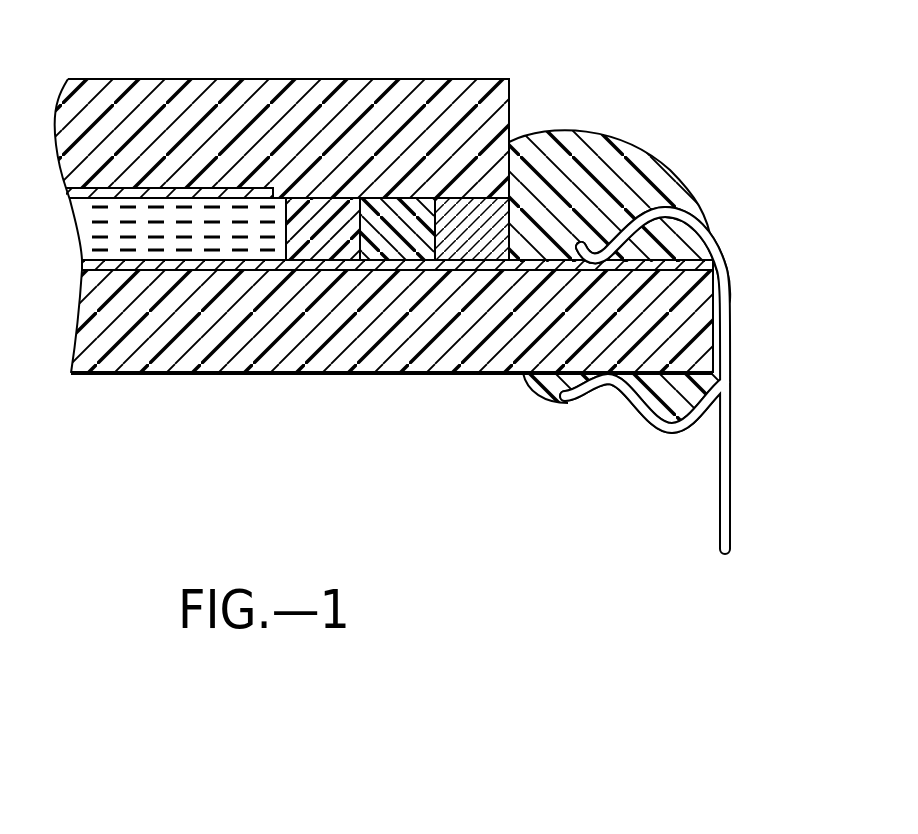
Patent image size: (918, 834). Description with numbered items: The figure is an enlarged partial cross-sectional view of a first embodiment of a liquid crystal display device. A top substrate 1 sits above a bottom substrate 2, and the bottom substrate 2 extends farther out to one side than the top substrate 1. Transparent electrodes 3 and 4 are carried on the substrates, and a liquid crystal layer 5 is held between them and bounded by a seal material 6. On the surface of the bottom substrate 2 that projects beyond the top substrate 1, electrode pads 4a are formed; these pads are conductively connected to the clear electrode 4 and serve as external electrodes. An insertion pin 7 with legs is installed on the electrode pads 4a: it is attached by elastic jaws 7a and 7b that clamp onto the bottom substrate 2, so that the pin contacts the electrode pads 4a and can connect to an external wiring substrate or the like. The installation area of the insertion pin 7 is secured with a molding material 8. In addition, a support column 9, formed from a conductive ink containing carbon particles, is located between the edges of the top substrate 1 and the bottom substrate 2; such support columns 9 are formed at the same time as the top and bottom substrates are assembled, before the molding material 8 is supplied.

The top substrate 1 is at (312, 78).
The bottom substrate 2 is at (194, 373).
The transparent electrode 3 is at (188, 190).
The transparent electrode 4 is at (142, 262).
The electrode pad 4a is at (668, 256).
The liquid crystal layer 5 is at (241, 246).
The seal material 6 is at (303, 252).
The insertion pin 7 is at (717, 488).
The elastic jaw 7a is at (594, 236).
The elastic jaw 7b is at (603, 386).
The molding material 8 is at (608, 140).
The support column 9 is at (483, 195).